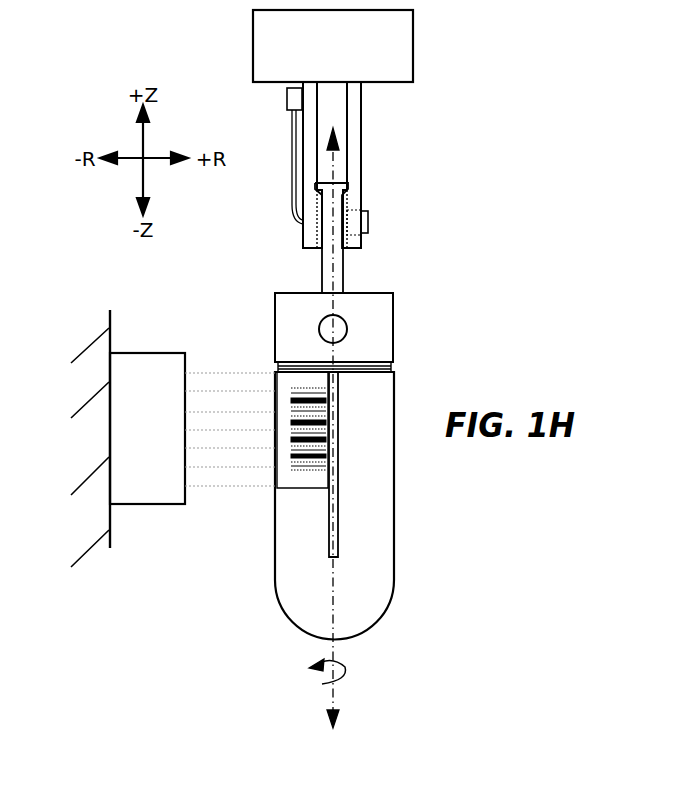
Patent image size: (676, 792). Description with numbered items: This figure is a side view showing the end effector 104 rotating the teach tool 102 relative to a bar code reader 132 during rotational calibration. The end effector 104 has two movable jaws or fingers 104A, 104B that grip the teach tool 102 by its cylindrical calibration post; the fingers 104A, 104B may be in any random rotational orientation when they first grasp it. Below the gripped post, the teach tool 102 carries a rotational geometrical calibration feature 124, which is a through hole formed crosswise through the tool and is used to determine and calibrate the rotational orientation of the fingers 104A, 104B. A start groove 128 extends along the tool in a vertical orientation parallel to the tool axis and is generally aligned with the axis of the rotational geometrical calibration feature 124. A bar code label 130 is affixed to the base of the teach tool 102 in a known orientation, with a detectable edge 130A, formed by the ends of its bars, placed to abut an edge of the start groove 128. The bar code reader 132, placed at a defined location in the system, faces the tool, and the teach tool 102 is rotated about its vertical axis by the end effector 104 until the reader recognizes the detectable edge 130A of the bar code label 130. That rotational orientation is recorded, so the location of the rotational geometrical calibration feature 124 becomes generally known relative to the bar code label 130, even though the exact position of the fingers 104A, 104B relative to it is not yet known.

The teach tool 102 is at (405, 565).
The end effector 104 is at (425, 88).
The end effector finger 104A is at (303, 240).
The end effector finger 104B is at (362, 240).
The rotational geometrical calibration feature 124 is at (347, 329).
The start groove 128 is at (338, 487).
The bar code label 130 is at (275, 487).
The detectable edge 130A is at (330, 410).
The bar code reader 132 is at (147, 504).